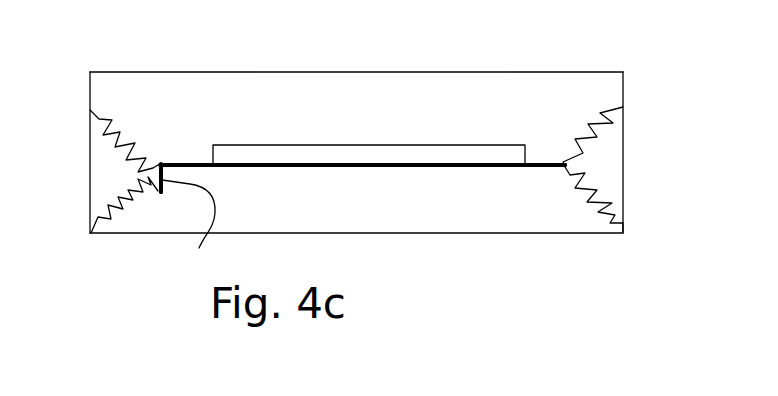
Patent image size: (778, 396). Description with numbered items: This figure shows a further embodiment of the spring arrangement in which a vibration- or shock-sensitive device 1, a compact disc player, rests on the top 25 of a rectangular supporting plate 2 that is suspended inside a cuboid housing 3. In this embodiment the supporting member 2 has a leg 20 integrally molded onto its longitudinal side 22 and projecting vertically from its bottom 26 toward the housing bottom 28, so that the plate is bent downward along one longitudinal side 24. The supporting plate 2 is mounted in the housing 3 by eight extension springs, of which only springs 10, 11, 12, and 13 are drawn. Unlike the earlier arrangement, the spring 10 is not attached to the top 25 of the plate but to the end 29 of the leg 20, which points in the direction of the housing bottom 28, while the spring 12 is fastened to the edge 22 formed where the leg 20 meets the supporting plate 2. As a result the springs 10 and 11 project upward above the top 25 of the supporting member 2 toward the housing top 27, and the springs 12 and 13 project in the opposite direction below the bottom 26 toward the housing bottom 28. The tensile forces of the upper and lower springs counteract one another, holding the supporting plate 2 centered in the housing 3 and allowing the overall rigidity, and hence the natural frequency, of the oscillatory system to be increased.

The vibration- or shock-sensitive device 1 is at (373, 145).
The supporting plate 2 is at (443, 168).
The housing 3 is at (590, 233).
The spring 10 is at (108, 138).
The spring 11 is at (608, 122).
The spring 12 is at (125, 207).
The spring 13 is at (595, 193).
The leg 20 is at (188, 224).
The longitudinal side 22 is at (158, 141).
The longitudinal side 24 is at (565, 167).
The top of the supporting plate 25 is at (190, 162).
The bottom of the supporting plate 26 is at (223, 167).
The housing top 27 is at (295, 72).
The housing bottom 28 is at (350, 234).
The end of the leg 29 is at (163, 190).